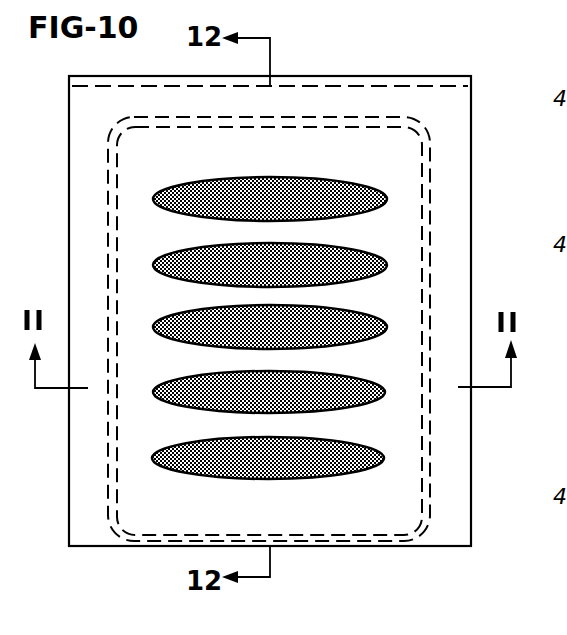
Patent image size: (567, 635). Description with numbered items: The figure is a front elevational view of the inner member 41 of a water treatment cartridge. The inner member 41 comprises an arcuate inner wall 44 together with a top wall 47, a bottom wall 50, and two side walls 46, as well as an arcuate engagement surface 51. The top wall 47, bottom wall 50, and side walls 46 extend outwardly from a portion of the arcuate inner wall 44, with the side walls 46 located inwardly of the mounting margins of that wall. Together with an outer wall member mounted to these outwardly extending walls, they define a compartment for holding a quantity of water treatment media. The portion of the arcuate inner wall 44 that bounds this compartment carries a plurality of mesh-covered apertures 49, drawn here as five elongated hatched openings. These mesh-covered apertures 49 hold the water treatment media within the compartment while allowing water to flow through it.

The inner member 41 is at (478, 462).
The arcuate inner wall 44 is at (471, 175).
The side walls 46 is at (108, 228).
The top wall 47 is at (380, 116).
The mesh-covered apertures 49 is at (185, 212).
The bottom wall 50 is at (370, 543).
The arcuate engagement surface 51 is at (468, 78).